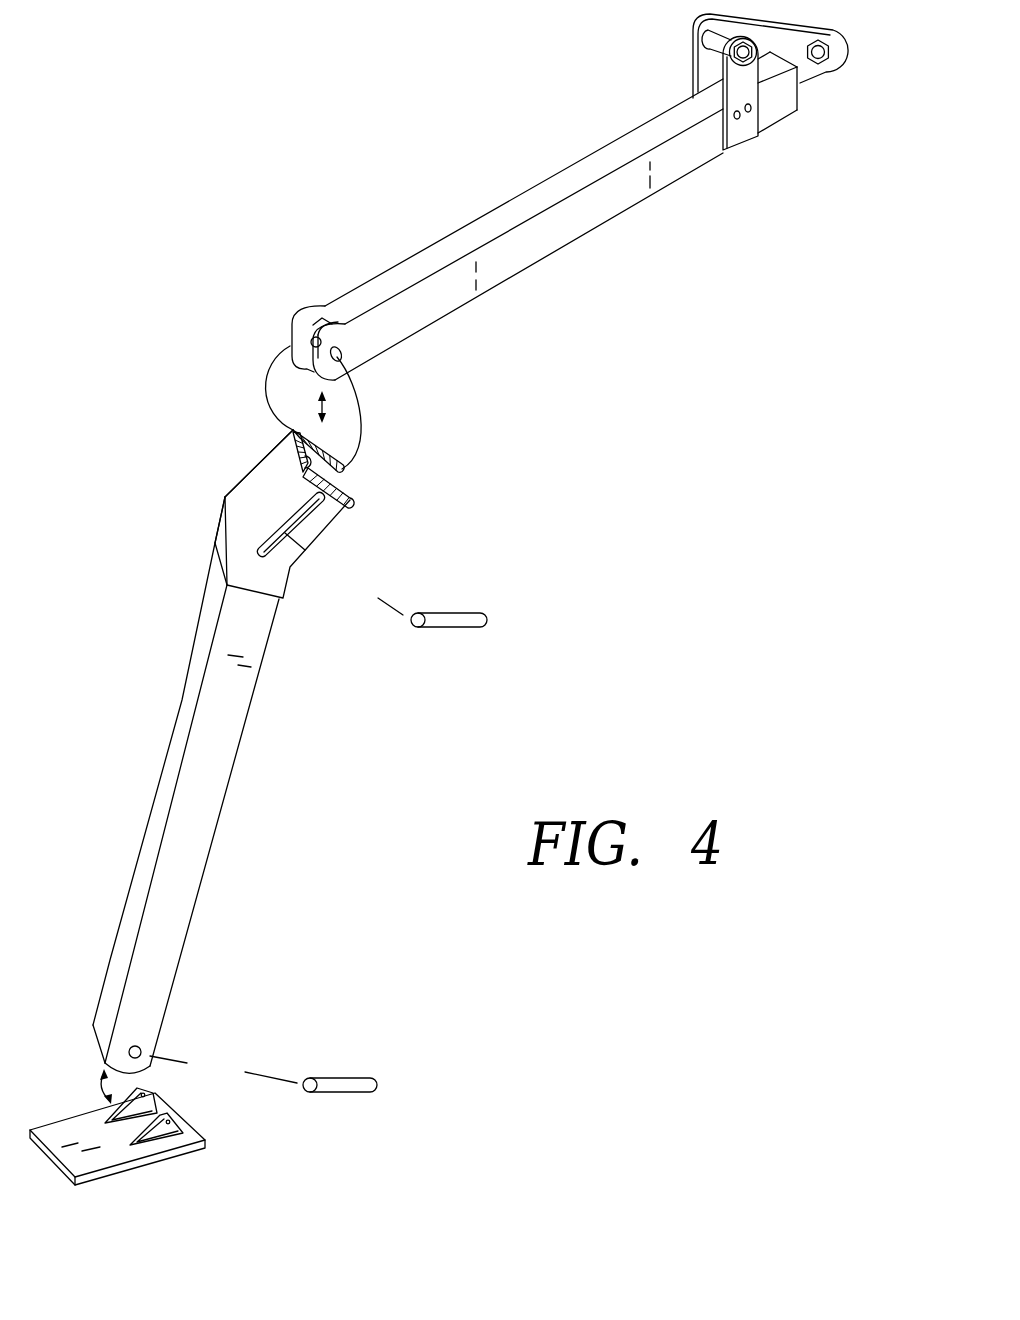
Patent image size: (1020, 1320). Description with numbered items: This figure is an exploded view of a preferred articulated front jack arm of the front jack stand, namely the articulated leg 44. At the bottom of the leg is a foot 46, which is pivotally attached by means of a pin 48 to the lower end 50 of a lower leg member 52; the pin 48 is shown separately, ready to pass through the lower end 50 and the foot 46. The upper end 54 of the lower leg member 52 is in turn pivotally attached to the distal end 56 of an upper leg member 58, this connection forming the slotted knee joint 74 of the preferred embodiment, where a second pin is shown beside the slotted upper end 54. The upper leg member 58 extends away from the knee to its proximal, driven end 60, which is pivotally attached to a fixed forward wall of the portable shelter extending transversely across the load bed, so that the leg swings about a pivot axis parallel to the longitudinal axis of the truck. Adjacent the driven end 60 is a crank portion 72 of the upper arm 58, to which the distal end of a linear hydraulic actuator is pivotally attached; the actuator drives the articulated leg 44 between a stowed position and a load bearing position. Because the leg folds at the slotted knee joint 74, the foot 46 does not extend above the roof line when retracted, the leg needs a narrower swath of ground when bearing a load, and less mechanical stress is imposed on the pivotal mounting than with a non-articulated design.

The articulated leg 44 is at (194, 522).
The foot 46 is at (172, 1148).
The pin 48 is at (330, 1085).
The lower end 50 is at (143, 1050).
The lower leg member 52 is at (206, 797).
The upper end 54 is at (282, 573).
The distal end 56 is at (368, 346).
The upper leg member 58 is at (585, 220).
The proximal, driven end 60 is at (769, 109).
The crank portion 72 is at (708, 67).
The slotted knee joint 74 is at (224, 471).